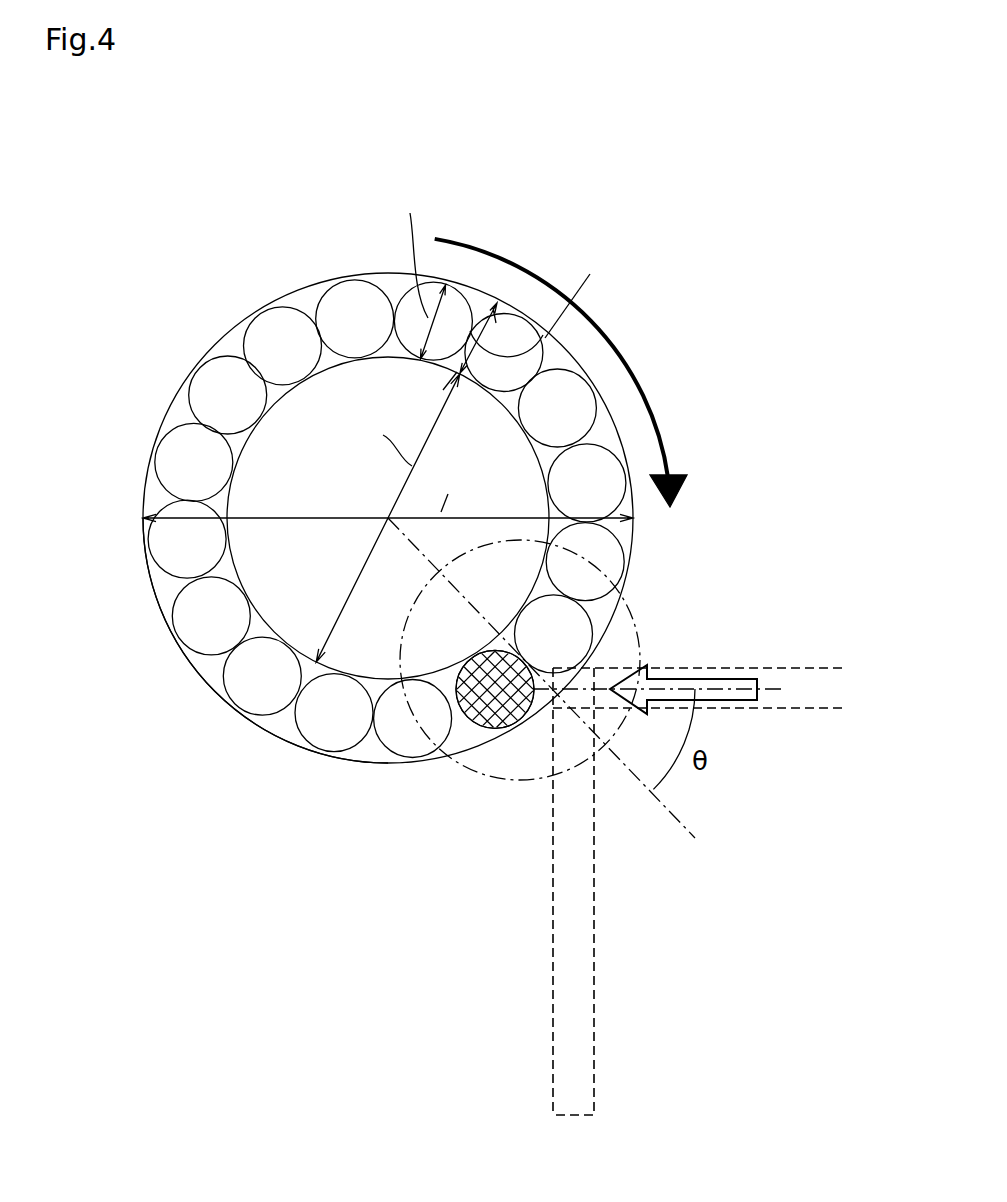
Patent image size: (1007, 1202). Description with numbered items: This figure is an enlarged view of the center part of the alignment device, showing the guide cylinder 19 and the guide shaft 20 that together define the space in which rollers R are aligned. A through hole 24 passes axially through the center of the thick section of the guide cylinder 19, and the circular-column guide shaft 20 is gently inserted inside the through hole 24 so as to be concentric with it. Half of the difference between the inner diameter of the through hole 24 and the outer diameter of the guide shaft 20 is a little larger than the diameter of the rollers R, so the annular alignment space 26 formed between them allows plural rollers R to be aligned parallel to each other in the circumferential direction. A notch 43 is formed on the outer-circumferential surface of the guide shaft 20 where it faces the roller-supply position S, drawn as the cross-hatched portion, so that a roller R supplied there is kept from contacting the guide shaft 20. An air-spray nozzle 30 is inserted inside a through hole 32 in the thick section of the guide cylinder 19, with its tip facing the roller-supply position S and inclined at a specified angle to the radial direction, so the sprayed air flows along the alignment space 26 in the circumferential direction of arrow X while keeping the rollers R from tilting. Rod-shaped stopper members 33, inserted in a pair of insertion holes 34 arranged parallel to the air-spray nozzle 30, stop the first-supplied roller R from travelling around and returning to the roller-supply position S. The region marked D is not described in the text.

The guide cylinder 19 is at (255, 778).
The guide shaft 20 is at (313, 403).
The through hole 24 is at (226, 343).
The alignment space 26 is at (210, 663).
The notch 43 is at (493, 650).
The air-spray nozzle 30 is at (798, 688).
The through hole 32 is at (773, 708).
The stopper members 33 is at (583, 1012).
The insertion holes 34 is at (553, 880).
The rollers R is at (565, 406).
The roller-supply position S is at (475, 730).
The load region D is at (637, 630).
The arrow X direction X is at (473, 245).